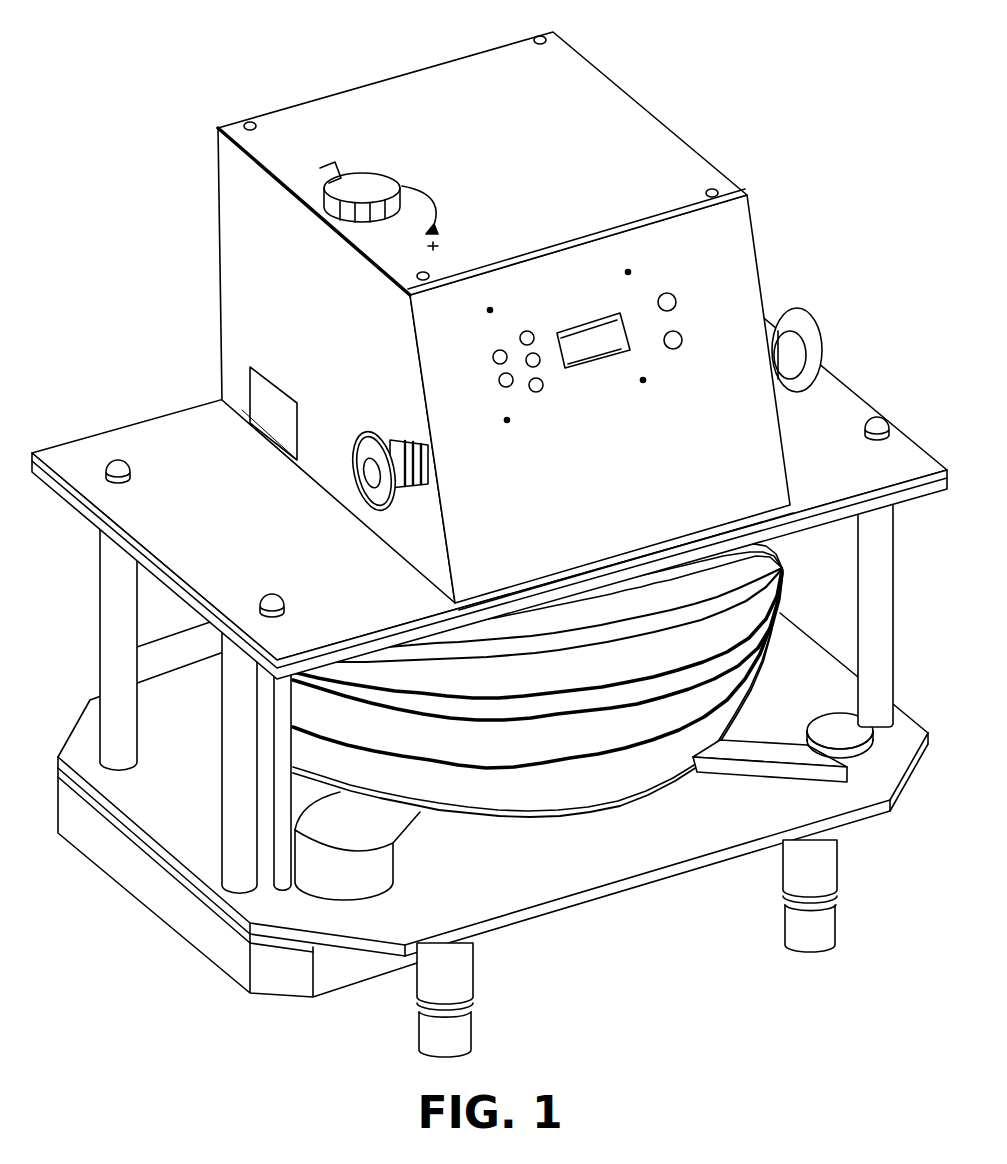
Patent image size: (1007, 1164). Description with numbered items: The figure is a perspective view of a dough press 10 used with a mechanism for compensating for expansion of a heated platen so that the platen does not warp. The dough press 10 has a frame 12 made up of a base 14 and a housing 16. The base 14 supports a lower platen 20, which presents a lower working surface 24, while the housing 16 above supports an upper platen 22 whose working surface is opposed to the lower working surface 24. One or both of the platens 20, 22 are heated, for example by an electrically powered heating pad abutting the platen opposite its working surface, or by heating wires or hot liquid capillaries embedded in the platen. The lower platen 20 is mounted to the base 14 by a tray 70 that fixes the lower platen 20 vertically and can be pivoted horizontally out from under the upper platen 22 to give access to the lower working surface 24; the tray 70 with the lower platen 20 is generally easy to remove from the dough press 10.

The dough press 10 is at (731, 94).
The frame 12 is at (142, 413).
The base 14 is at (590, 908).
The housing 16 is at (764, 272).
The lower platen 20 is at (591, 803).
The upper platen 22 is at (786, 580).
The lower working surface 24 is at (521, 752).
The tray 70 is at (421, 828).